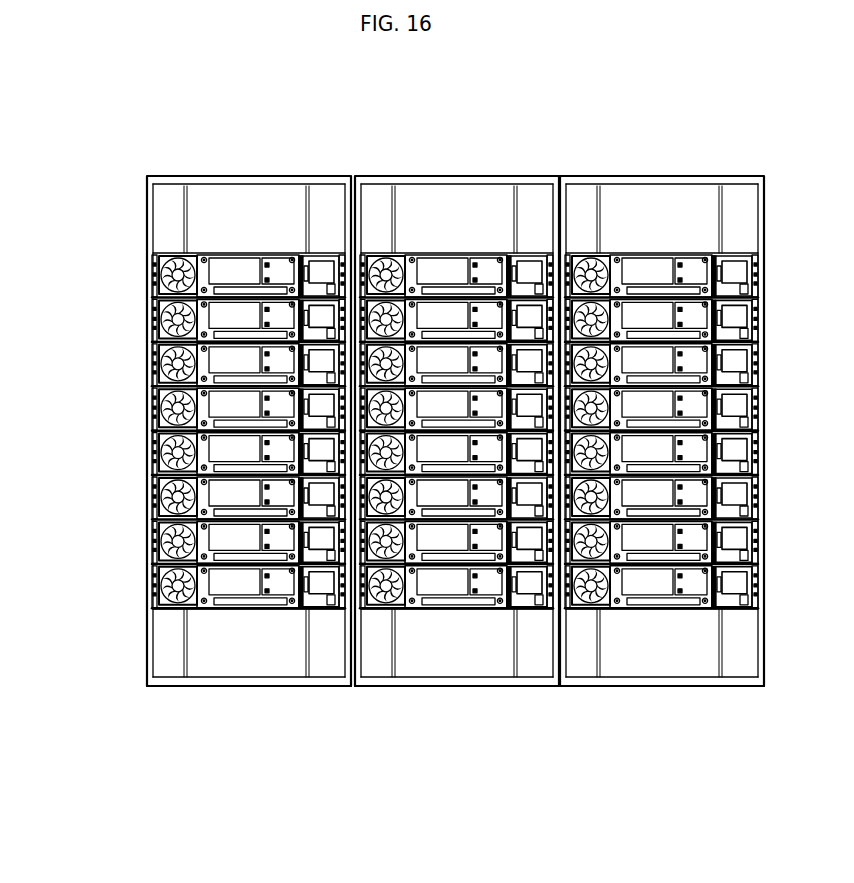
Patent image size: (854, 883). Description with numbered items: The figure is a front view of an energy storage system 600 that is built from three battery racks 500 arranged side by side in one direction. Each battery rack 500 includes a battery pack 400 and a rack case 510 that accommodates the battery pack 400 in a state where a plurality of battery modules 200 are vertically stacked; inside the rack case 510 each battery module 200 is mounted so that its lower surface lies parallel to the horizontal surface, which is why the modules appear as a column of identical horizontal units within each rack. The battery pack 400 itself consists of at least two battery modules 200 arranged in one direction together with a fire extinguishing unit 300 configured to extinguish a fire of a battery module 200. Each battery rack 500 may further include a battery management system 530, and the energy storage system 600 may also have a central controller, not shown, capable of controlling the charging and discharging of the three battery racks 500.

The energy storage system 600 is at (197, 94).
The battery rack 500 is at (455, 396).
The battery pack 400 is at (88, 207).
The fire extinguishing unit 300 is at (175, 215).
The battery module 200 is at (200, 350).
The battery management system 530 is at (182, 644).
The rack case 510 is at (455, 712).